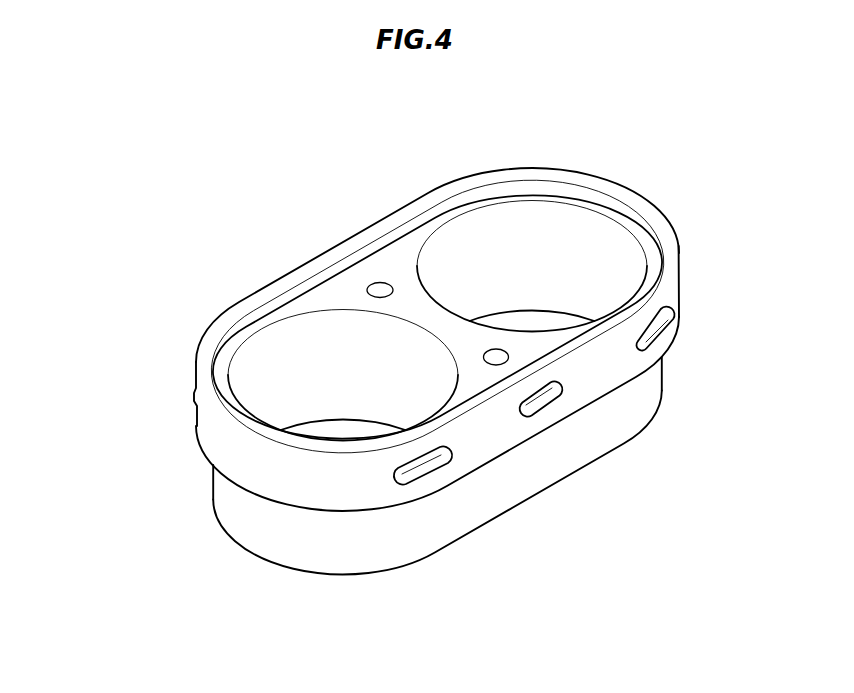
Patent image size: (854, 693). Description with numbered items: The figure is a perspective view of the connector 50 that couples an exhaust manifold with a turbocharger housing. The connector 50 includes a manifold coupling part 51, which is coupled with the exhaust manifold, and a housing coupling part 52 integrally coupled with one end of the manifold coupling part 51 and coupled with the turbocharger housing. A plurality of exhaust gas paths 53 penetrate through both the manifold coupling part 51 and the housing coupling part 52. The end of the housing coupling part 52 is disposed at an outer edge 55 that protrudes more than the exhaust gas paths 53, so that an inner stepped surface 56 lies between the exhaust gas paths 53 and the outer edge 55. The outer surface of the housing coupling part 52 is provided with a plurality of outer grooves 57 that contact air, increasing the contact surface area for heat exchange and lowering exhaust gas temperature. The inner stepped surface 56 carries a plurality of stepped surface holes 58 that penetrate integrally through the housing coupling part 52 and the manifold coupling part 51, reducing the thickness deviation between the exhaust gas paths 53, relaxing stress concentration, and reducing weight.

The connector 50 is at (160, 375).
The manifold coupling part 51 is at (500, 498).
The housing coupling part 52 is at (303, 485).
The exhaust gas paths 53 is at (270, 352).
The outer edge 55 is at (406, 212).
The inner stepped surface 56 is at (350, 290).
The outer grooves 57 is at (664, 328).
The stepped surface holes 58 is at (377, 283).